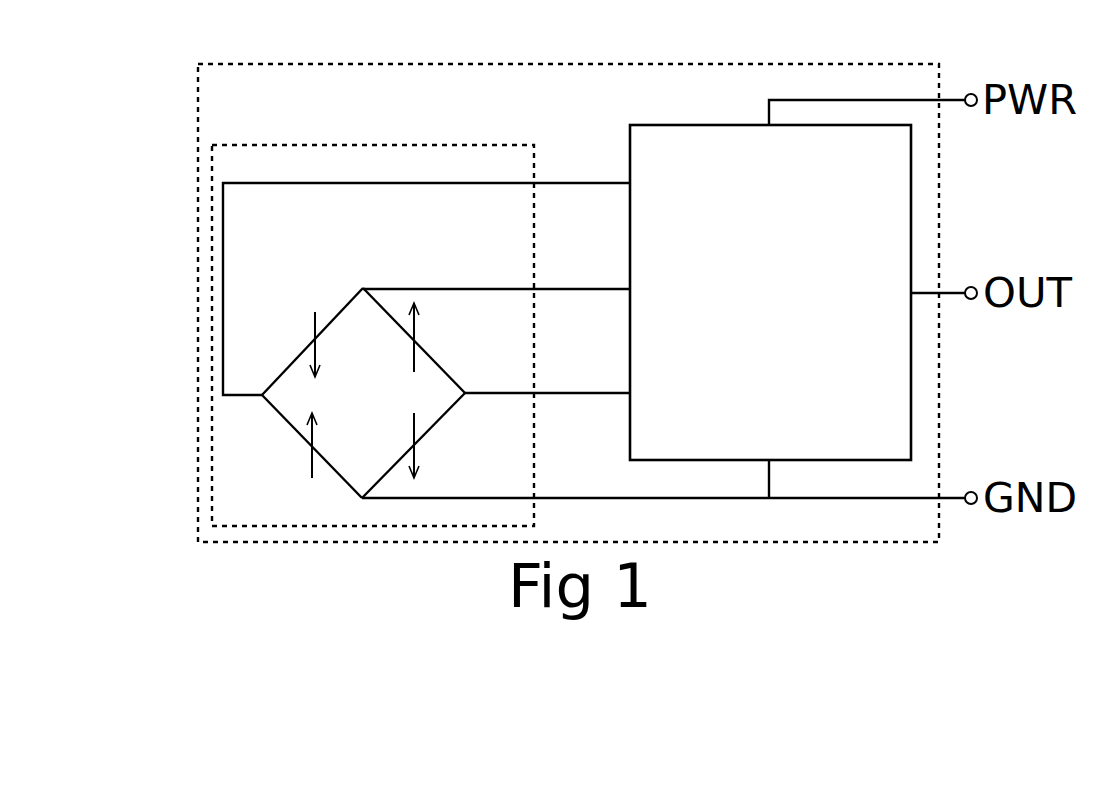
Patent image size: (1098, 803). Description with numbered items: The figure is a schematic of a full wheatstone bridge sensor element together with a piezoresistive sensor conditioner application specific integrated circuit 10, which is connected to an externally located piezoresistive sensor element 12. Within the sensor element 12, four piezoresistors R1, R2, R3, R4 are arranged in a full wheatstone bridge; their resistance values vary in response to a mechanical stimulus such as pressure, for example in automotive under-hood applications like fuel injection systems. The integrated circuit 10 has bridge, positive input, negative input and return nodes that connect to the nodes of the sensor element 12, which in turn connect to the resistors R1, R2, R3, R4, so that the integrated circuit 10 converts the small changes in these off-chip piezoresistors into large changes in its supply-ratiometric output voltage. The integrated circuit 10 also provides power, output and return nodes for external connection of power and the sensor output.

The application specific integrated circuit 10 is at (653, 123).
The piezoresistive sensor element 12 is at (374, 296).
The piezoresistor R1 is at (312, 341).
The piezoresistor R2 is at (312, 446).
The piezoresistor R3 is at (423, 340).
The piezoresistor R4 is at (418, 445).